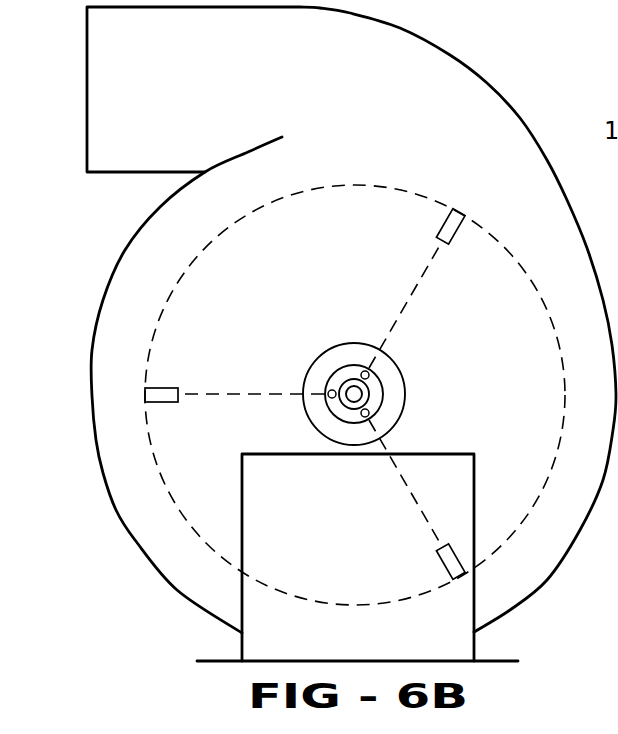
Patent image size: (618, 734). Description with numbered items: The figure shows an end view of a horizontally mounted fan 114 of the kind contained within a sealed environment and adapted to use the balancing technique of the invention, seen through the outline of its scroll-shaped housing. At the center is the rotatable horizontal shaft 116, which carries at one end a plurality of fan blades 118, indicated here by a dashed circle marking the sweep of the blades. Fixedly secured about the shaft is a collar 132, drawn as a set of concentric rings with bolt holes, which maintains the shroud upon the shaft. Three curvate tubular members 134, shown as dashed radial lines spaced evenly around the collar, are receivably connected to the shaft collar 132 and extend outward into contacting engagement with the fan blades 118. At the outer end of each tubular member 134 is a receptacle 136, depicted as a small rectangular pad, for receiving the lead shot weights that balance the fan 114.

The fan 114 is at (539, 125).
The horizontal shaft 116 is at (347, 396).
The fan blades 118 is at (325, 182).
The collar 132 is at (383, 388).
The curvate tubular members 134 is at (411, 297).
The receptacles 136 is at (456, 211).